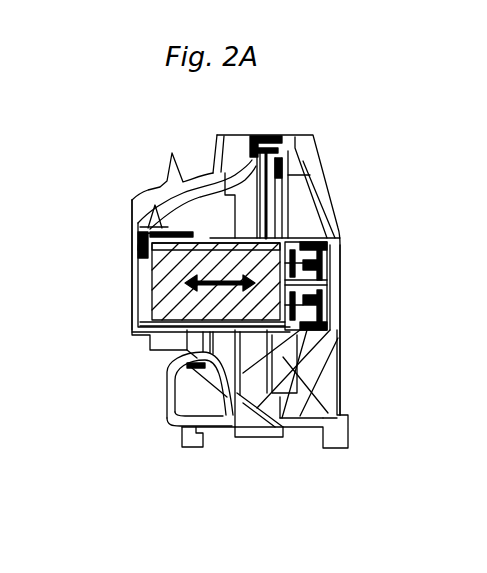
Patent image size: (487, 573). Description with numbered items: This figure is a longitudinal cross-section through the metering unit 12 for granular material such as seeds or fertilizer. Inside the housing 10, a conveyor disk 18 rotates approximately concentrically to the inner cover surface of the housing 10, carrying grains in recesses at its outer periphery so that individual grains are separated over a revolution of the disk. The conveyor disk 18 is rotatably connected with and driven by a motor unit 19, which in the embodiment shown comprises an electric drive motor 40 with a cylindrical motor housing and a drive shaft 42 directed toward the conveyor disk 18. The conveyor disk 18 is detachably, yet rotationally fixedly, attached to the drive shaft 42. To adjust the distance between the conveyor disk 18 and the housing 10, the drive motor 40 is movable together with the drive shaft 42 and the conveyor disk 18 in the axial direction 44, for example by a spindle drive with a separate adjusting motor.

The housing 10 is at (356, 129).
The metering unit 12 is at (362, 127).
The conveyor disk 18 is at (290, 216).
The motor unit 19 is at (153, 365).
The electric drive motor 40 is at (230, 257).
The drive shaft 42 is at (322, 283).
The axial direction 44 is at (148, 230).